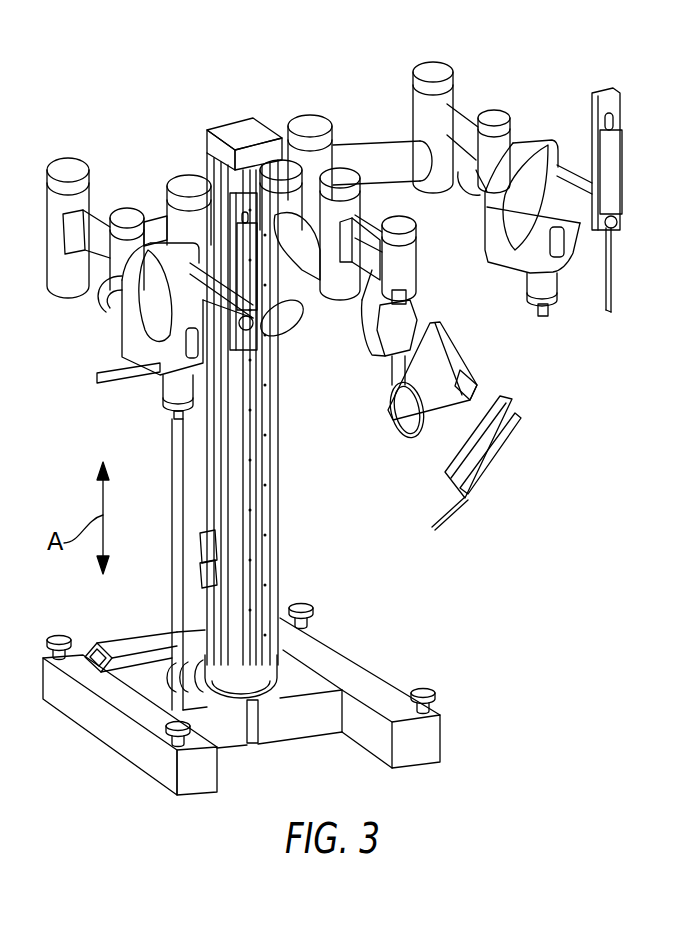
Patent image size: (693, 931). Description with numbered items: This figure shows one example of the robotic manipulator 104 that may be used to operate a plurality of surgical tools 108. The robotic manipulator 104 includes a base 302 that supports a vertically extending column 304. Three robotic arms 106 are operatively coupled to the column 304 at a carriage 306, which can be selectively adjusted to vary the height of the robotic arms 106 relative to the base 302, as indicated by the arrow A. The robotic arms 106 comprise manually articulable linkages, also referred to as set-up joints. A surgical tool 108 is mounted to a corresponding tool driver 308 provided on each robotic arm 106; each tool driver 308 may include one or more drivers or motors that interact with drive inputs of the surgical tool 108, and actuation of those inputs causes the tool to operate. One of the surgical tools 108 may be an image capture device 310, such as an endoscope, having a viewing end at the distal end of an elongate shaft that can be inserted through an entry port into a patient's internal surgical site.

The robotic manipulator 104 is at (99, 80).
The robotic arm 106 is at (102, 326).
The surgical tool 108 is at (262, 292).
The base 302 is at (380, 692).
The column 304 is at (278, 520).
The carriage 306 is at (292, 288).
The tool driver 308 is at (232, 190).
The image capture device 310 is at (605, 305).